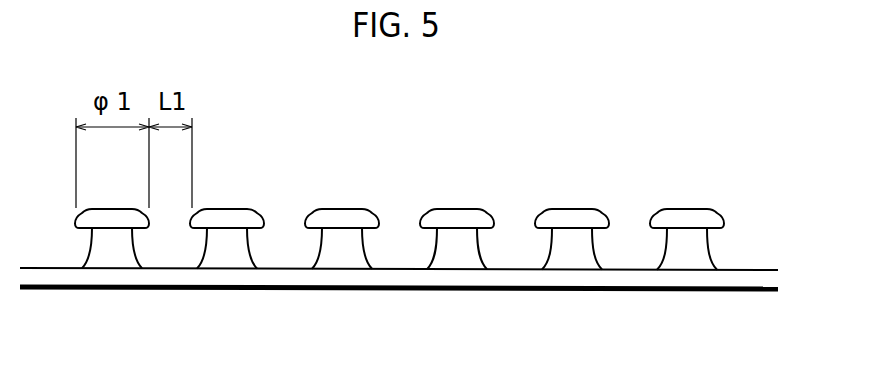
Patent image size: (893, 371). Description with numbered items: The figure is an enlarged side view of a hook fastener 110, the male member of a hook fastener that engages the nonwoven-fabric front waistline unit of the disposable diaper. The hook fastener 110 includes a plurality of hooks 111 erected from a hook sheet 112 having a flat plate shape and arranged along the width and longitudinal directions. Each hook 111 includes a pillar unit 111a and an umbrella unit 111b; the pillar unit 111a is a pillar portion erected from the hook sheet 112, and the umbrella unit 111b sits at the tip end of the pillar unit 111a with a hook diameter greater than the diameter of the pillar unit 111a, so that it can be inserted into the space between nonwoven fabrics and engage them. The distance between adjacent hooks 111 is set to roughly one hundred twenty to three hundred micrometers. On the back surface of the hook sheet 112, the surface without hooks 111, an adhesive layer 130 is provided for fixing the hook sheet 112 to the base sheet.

The hook fastener 110 is at (708, 172).
The hook 111 is at (455, 202).
The pillar unit 111a is at (468, 248).
The umbrella unit 111b is at (471, 211).
The hook sheet 112 is at (508, 280).
The adhesive layer 130 is at (578, 291).